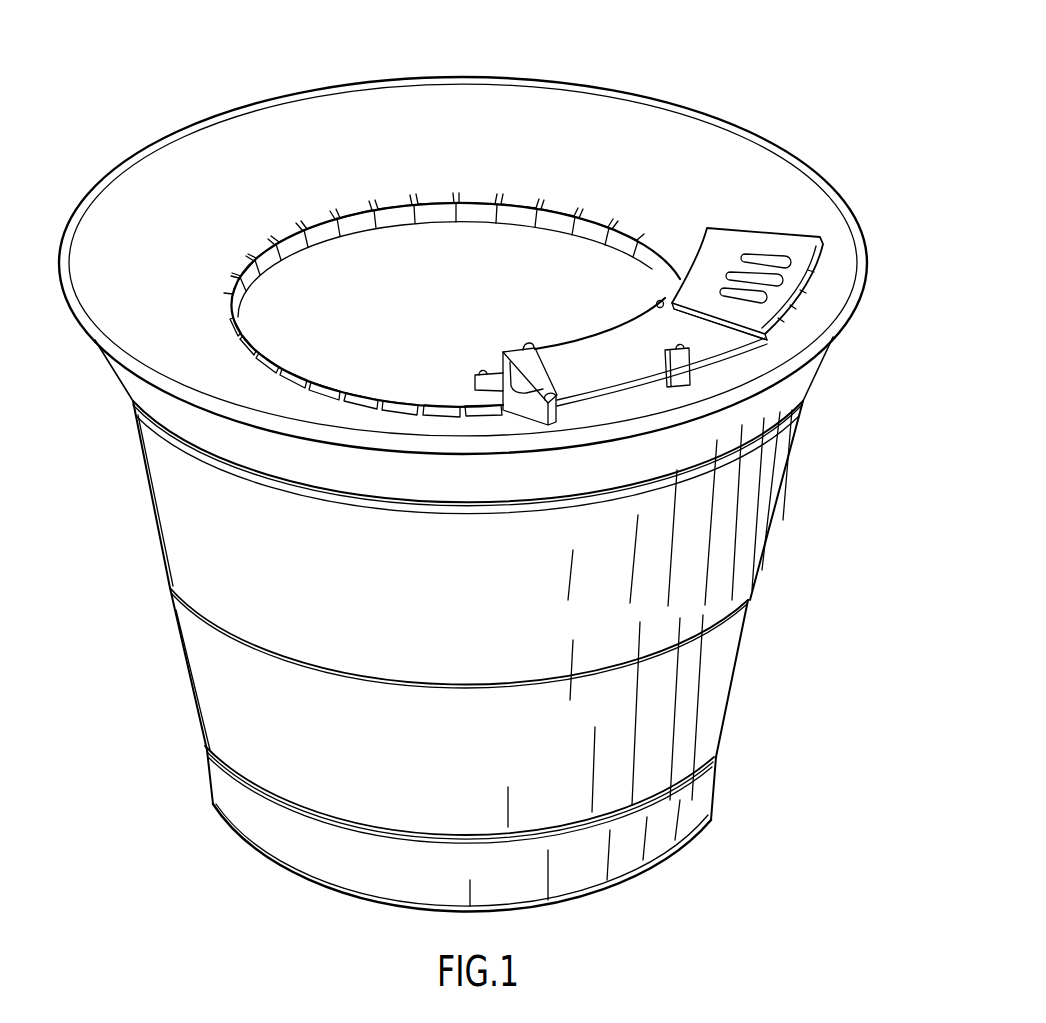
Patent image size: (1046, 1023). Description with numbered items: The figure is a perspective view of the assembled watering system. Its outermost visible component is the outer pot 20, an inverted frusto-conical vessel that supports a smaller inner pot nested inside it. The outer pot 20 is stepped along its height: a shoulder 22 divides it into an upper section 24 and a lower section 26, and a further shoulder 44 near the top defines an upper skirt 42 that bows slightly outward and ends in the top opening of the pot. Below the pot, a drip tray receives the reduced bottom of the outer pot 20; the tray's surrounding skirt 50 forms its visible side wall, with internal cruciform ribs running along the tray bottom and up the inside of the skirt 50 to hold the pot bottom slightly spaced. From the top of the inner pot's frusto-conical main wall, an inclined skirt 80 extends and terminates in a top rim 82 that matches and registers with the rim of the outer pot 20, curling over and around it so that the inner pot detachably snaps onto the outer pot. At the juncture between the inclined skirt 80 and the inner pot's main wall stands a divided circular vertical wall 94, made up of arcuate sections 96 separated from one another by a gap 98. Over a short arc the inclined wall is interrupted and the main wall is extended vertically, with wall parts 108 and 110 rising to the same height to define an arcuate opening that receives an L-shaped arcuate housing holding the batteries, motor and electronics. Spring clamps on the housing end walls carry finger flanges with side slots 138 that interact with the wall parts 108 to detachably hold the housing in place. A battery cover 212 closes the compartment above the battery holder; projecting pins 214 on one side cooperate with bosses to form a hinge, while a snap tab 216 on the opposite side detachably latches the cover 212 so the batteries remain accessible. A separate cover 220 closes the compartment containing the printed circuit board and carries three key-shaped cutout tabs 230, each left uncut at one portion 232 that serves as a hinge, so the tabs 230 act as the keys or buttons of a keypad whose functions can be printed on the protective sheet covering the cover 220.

The outer pot 20 is at (792, 548).
The shoulder 22 is at (752, 616).
The upper section 24 is at (776, 486).
The lower section 26 is at (724, 688).
The upper skirt 42 is at (815, 373).
The further shoulder 44 is at (773, 430).
The surrounding skirt 50 is at (716, 792).
The inclined skirt 80 is at (638, 120).
The top rim 82 is at (824, 249).
The divided circular vertical wall 94 is at (438, 191).
The arcuate sections 96 is at (560, 195).
The gap 98 is at (491, 192).
The wall parts 108 is at (525, 417).
The wall parts 110 is at (608, 412).
The side slots 138 is at (530, 378).
The battery cover 212 is at (614, 340).
The projecting pins 214 is at (526, 346).
The snap tab 216 is at (696, 350).
The cover 220 is at (808, 293).
The key shaped cutout tabs 230 is at (774, 262).
The uncut portion 232 is at (740, 262).